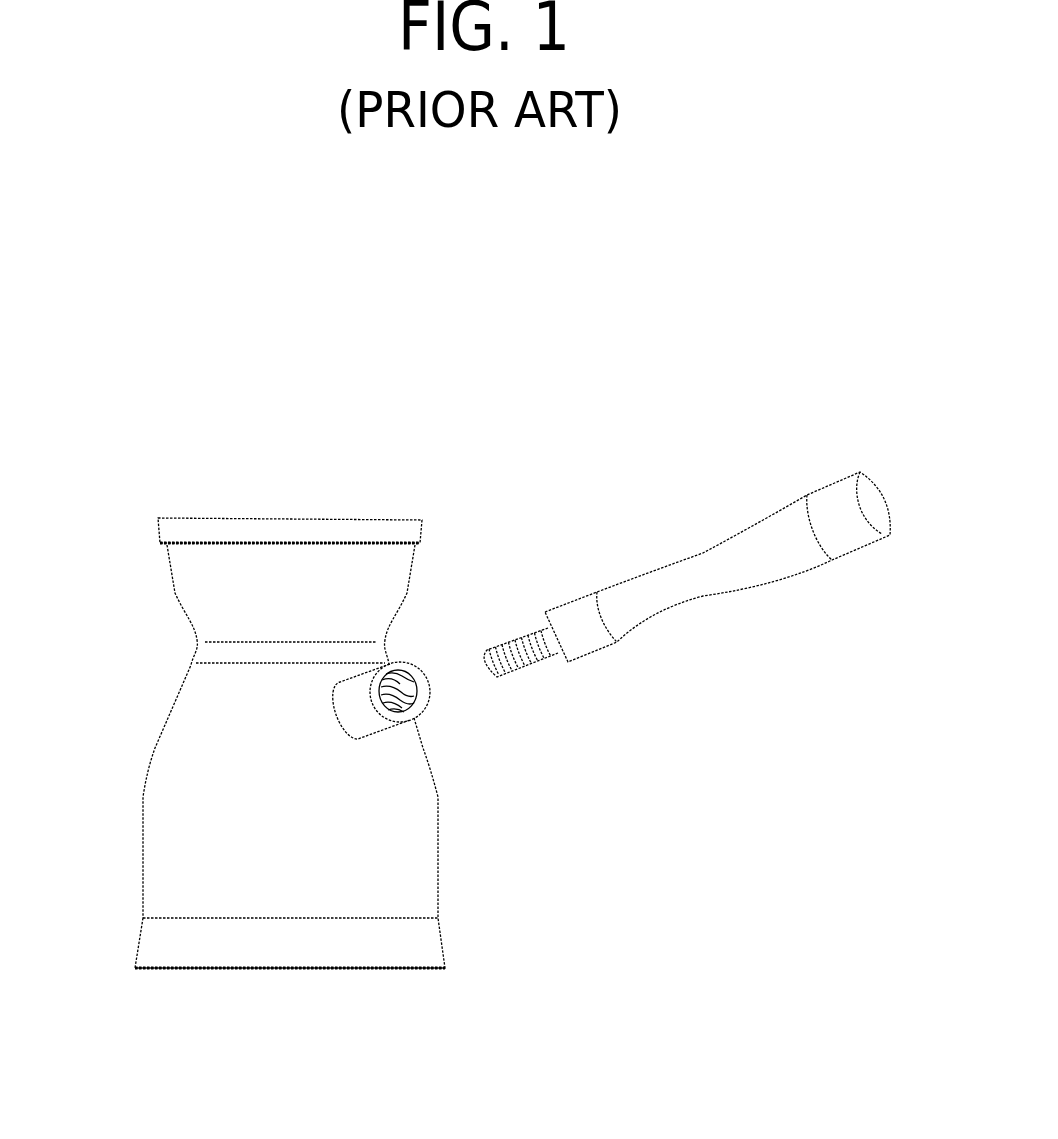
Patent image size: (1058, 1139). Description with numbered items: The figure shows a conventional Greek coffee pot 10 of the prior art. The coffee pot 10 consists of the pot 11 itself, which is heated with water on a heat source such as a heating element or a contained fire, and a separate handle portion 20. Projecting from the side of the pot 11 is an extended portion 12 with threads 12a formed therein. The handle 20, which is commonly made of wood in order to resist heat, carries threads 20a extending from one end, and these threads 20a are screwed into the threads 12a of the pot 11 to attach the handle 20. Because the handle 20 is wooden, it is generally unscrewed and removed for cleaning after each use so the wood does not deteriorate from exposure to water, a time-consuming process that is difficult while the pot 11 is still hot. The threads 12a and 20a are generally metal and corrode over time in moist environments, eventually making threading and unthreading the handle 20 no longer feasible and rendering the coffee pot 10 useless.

The Greek coffee pot 10 is at (218, 323).
The pot 11 is at (132, 505).
The extended portion 12 is at (352, 708).
The threads 12a is at (407, 690).
The handle portion 20 is at (697, 530).
The threads 20a is at (507, 633).